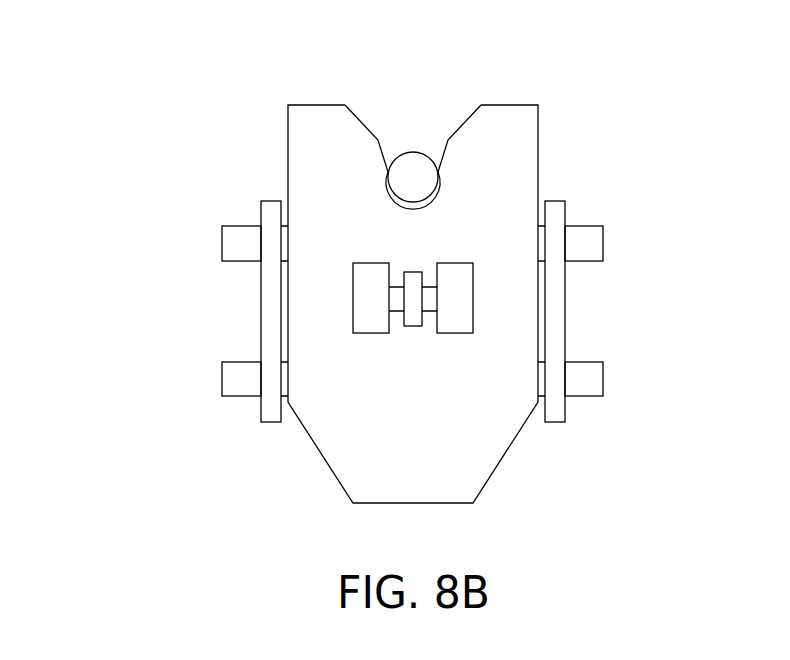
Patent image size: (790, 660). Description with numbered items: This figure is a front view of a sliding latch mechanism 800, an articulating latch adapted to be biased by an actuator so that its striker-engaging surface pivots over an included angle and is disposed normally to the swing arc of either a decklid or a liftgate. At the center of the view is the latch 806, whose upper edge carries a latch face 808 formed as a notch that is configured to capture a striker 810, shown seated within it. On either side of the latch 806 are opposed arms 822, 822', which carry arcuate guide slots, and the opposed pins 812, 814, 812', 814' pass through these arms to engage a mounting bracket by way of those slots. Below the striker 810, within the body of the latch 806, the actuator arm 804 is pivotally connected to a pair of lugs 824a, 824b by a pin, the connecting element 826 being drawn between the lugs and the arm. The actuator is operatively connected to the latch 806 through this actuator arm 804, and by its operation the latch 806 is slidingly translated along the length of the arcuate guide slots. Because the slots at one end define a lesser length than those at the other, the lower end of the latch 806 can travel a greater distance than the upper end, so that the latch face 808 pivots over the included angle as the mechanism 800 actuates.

The sliding latch mechanism 800 is at (162, 116).
The latch 806 is at (515, 122).
The latch face 808 is at (350, 110).
The striker 810 is at (413, 151).
The arm 822 is at (254, 279).
The arm 822' is at (577, 278).
The pin 812 is at (215, 247).
The pin 814 is at (215, 383).
The pin 812' is at (614, 242).
The pin 814' is at (614, 378).
The lug 824a is at (373, 325).
The lug 824b is at (463, 325).
The actuator arm 804 is at (417, 320).
The axle 826 is at (432, 292).